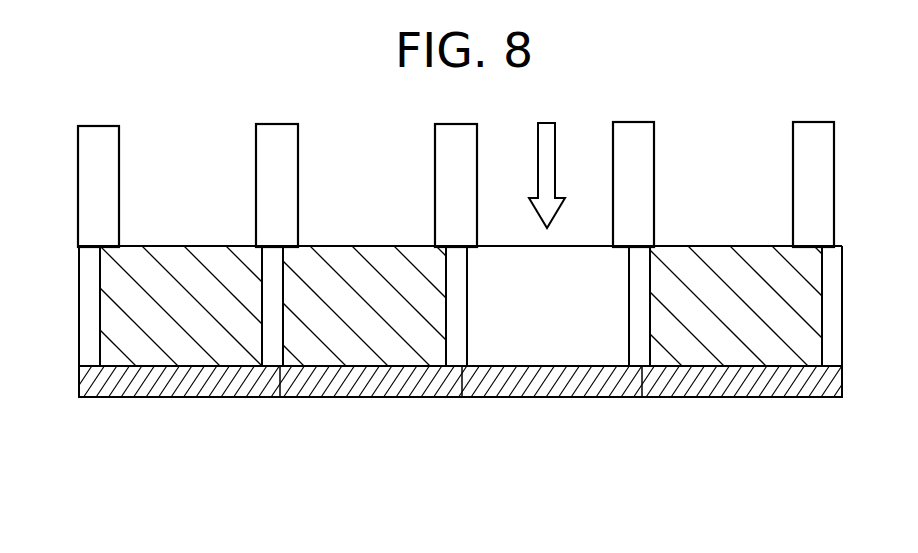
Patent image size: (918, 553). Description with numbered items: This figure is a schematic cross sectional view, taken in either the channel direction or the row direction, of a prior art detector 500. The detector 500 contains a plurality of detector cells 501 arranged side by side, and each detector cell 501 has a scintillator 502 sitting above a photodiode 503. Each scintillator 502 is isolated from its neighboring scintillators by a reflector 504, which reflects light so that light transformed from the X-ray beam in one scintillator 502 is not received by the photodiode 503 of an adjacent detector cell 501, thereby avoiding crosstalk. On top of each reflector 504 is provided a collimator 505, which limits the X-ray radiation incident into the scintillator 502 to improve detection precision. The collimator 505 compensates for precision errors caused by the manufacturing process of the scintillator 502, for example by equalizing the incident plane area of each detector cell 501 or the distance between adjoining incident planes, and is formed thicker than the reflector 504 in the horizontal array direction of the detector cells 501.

The detector 500 is at (744, 92).
The detector cell 501 is at (697, 408).
The scintillator 502 is at (192, 345).
The photodiode 503 is at (137, 380).
The reflector 504 is at (273, 349).
The collimator 505 is at (282, 159).